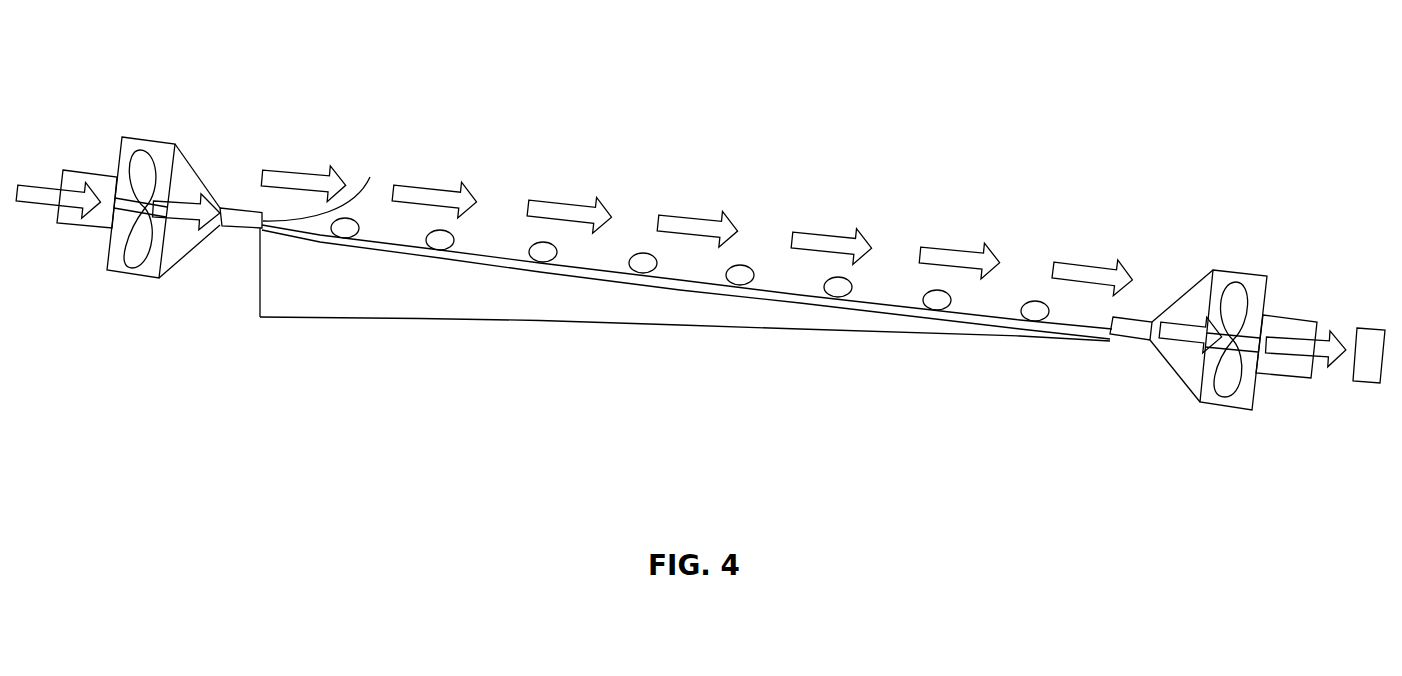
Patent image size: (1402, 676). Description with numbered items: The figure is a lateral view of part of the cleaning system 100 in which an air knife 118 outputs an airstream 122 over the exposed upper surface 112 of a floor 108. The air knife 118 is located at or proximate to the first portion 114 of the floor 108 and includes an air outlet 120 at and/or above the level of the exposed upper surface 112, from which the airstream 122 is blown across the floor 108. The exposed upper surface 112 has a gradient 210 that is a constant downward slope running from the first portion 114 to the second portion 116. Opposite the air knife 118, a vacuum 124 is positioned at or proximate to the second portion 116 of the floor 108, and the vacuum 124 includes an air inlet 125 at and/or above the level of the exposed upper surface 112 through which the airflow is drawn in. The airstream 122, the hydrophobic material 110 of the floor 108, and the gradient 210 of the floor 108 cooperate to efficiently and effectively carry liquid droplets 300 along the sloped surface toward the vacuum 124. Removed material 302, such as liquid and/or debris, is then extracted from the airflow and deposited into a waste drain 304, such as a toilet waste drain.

The cleaning system 100 is at (72, 124).
The air knife 118 is at (157, 138).
The first portion 114 is at (260, 238).
The air outlet 120 is at (329, 183).
The exposed upper surface 112 is at (310, 245).
The gradient 210 is at (258, 300).
The floor 108 is at (445, 320).
The hydrophobic material 110 is at (505, 293).
The liquid droplets 300 is at (537, 243).
The airstream 122 is at (312, 166).
The air inlet 125 is at (1112, 322).
The second portion 116 is at (1118, 338).
The vacuum 124 is at (1245, 270).
The removed material 302 is at (1322, 340).
The waste drain 304 is at (1365, 383).